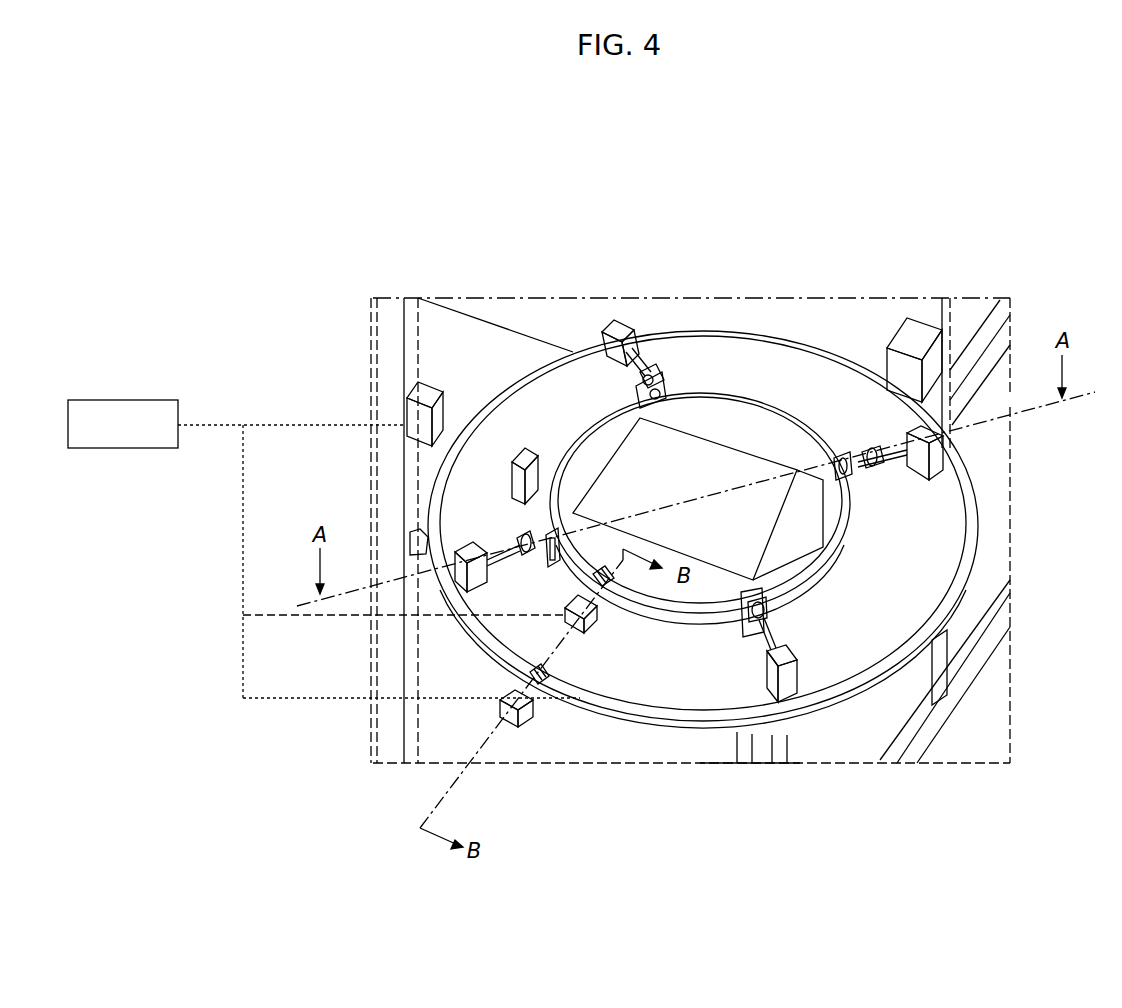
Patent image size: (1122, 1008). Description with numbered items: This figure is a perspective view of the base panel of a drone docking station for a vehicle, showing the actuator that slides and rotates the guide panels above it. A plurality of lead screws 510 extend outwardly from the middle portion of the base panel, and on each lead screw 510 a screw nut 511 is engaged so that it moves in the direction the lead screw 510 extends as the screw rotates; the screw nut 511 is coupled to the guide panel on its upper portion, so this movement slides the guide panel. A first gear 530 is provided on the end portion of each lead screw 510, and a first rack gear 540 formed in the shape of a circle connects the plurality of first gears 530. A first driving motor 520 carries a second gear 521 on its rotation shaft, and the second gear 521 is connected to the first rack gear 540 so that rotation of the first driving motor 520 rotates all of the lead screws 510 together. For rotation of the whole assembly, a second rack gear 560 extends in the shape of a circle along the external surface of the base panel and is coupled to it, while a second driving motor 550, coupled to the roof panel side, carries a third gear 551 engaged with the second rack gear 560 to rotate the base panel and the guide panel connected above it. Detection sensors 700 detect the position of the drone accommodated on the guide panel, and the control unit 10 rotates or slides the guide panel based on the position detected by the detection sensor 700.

The control unit 10 is at (122, 400).
The detection sensor 700 is at (407, 402).
The lead screw 510 is at (643, 334).
The screw nut 511 is at (665, 372).
The first gear 530 is at (712, 393).
The first rack gear 540 is at (700, 618).
The first driving motor 520 is at (577, 633).
The second gear 521 is at (607, 588).
The second driving motor 550 is at (514, 728).
The third gear 551 is at (541, 686).
The second rack gear 560 is at (736, 764).